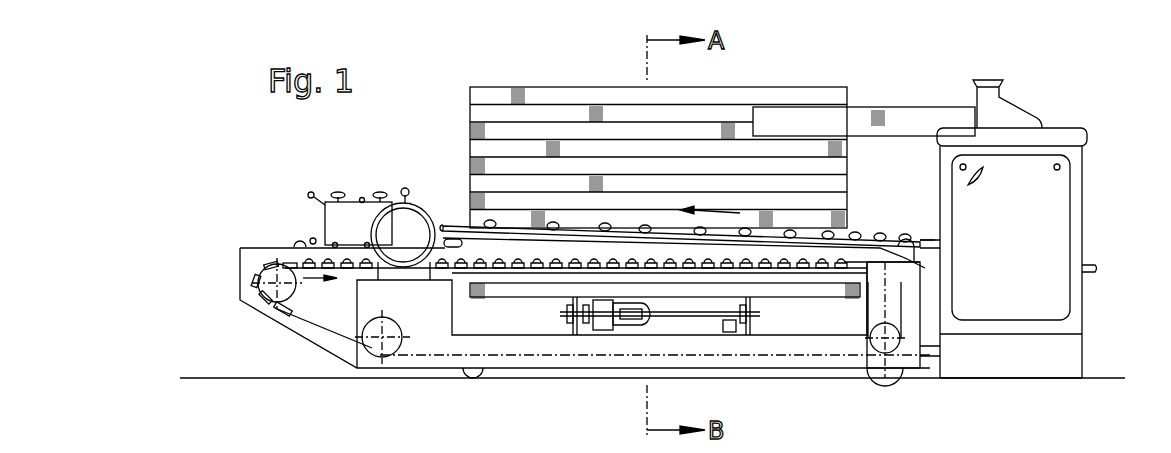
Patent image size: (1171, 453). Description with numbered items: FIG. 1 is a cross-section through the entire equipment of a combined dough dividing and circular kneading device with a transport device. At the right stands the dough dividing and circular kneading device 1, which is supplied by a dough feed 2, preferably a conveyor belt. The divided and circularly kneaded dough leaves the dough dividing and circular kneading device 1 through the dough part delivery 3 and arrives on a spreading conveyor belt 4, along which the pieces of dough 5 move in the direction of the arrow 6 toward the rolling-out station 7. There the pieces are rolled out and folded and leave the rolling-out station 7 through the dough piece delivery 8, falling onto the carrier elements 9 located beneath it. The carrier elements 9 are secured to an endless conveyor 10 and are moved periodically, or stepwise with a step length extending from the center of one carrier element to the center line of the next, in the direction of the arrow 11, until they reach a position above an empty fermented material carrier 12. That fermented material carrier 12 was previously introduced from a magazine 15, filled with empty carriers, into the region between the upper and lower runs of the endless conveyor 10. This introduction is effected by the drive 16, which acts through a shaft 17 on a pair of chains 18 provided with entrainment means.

The dough dividing and circular kneading device 1 is at (1075, 133).
The dough feed 2 is at (898, 125).
The dough part delivery 3 is at (923, 238).
The spreading conveyor belt 4 is at (868, 242).
The pieces of dough 5 is at (826, 238).
The arrow 6 is at (733, 212).
The rolling-out station 7 is at (422, 230).
The dough piece delivery 8 is at (308, 237).
The carrier elements 9 is at (271, 265).
The endless conveyor 10 is at (299, 322).
The arrow 11 is at (322, 282).
The fermented material carrier 12 is at (502, 290).
The magazine 15 is at (497, 95).
The drive 16 is at (630, 325).
The shaft 17 is at (683, 318).
The pair of chains 18 is at (576, 335).